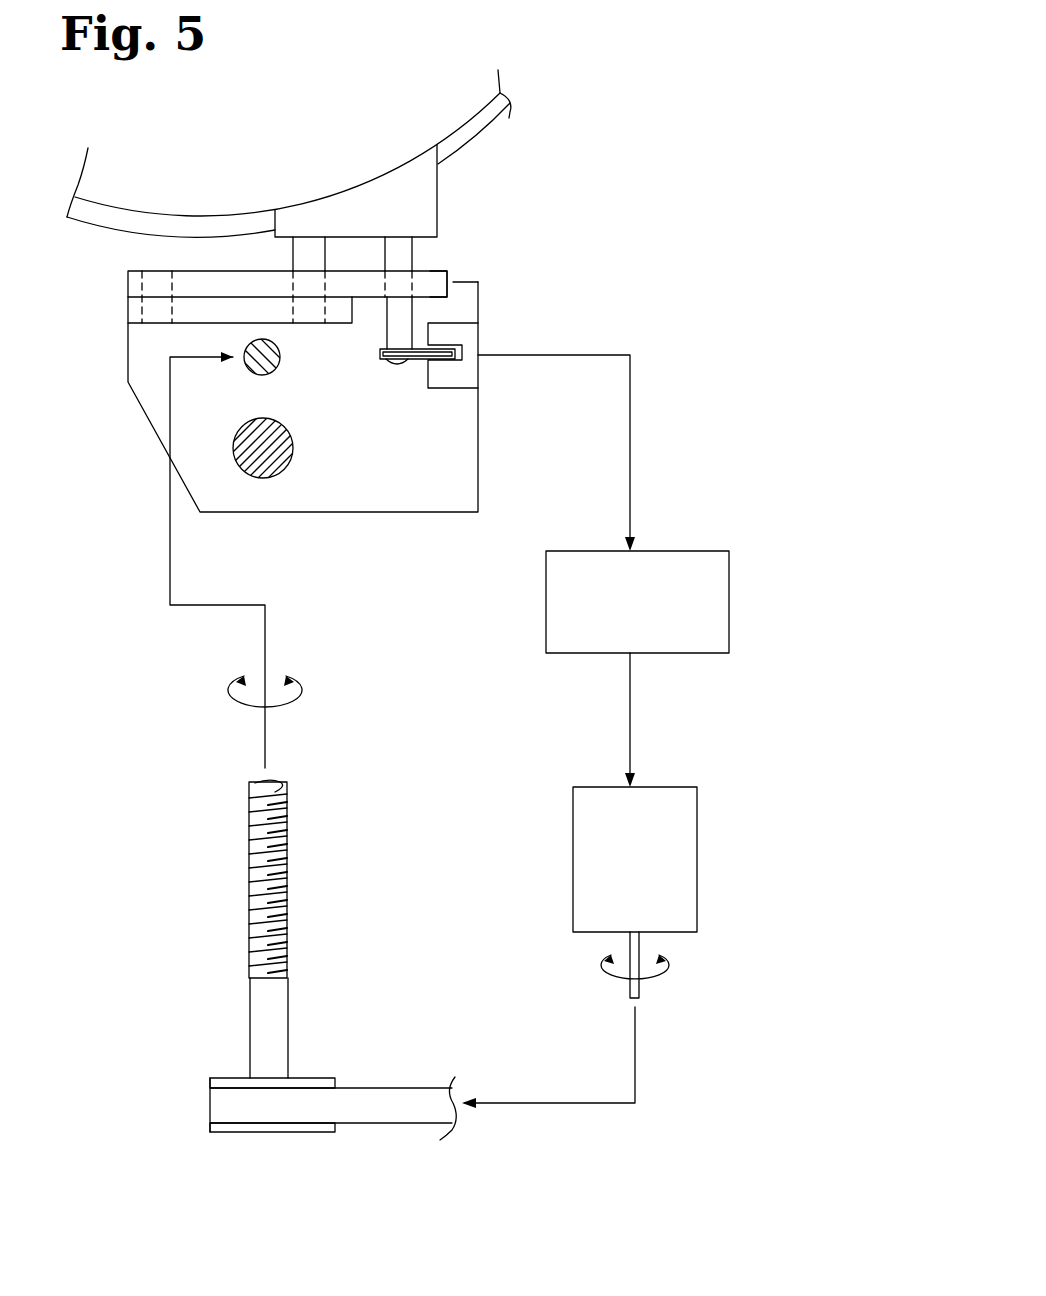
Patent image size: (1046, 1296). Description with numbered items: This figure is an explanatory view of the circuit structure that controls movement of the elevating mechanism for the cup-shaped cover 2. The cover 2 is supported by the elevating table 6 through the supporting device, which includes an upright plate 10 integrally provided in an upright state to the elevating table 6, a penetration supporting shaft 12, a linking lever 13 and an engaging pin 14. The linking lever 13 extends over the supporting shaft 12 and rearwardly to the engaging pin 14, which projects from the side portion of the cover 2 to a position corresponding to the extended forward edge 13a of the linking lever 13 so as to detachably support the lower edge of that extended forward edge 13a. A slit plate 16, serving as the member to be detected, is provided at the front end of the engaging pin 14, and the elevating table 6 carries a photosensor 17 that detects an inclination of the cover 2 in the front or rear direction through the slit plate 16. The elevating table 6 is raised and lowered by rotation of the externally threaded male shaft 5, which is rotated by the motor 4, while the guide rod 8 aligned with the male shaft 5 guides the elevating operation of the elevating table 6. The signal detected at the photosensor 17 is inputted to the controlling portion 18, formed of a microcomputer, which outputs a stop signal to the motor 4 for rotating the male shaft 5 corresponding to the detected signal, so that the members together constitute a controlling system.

The cover 2 is at (450, 88).
The motor 4 is at (697, 845).
The male shaft 5 is at (283, 362).
The elevating table 6 is at (408, 512).
The guide rod 8 is at (285, 472).
The upright plate 10 is at (193, 315).
The penetration supporting shaft 12 is at (308, 253).
The linking lever 13 is at (220, 282).
The extended forward edge 13a is at (437, 280).
The engaging pin 14 is at (400, 250).
The slit plate 16 is at (420, 360).
The photosensor 17 is at (465, 333).
The controlling portion 18 is at (690, 551).